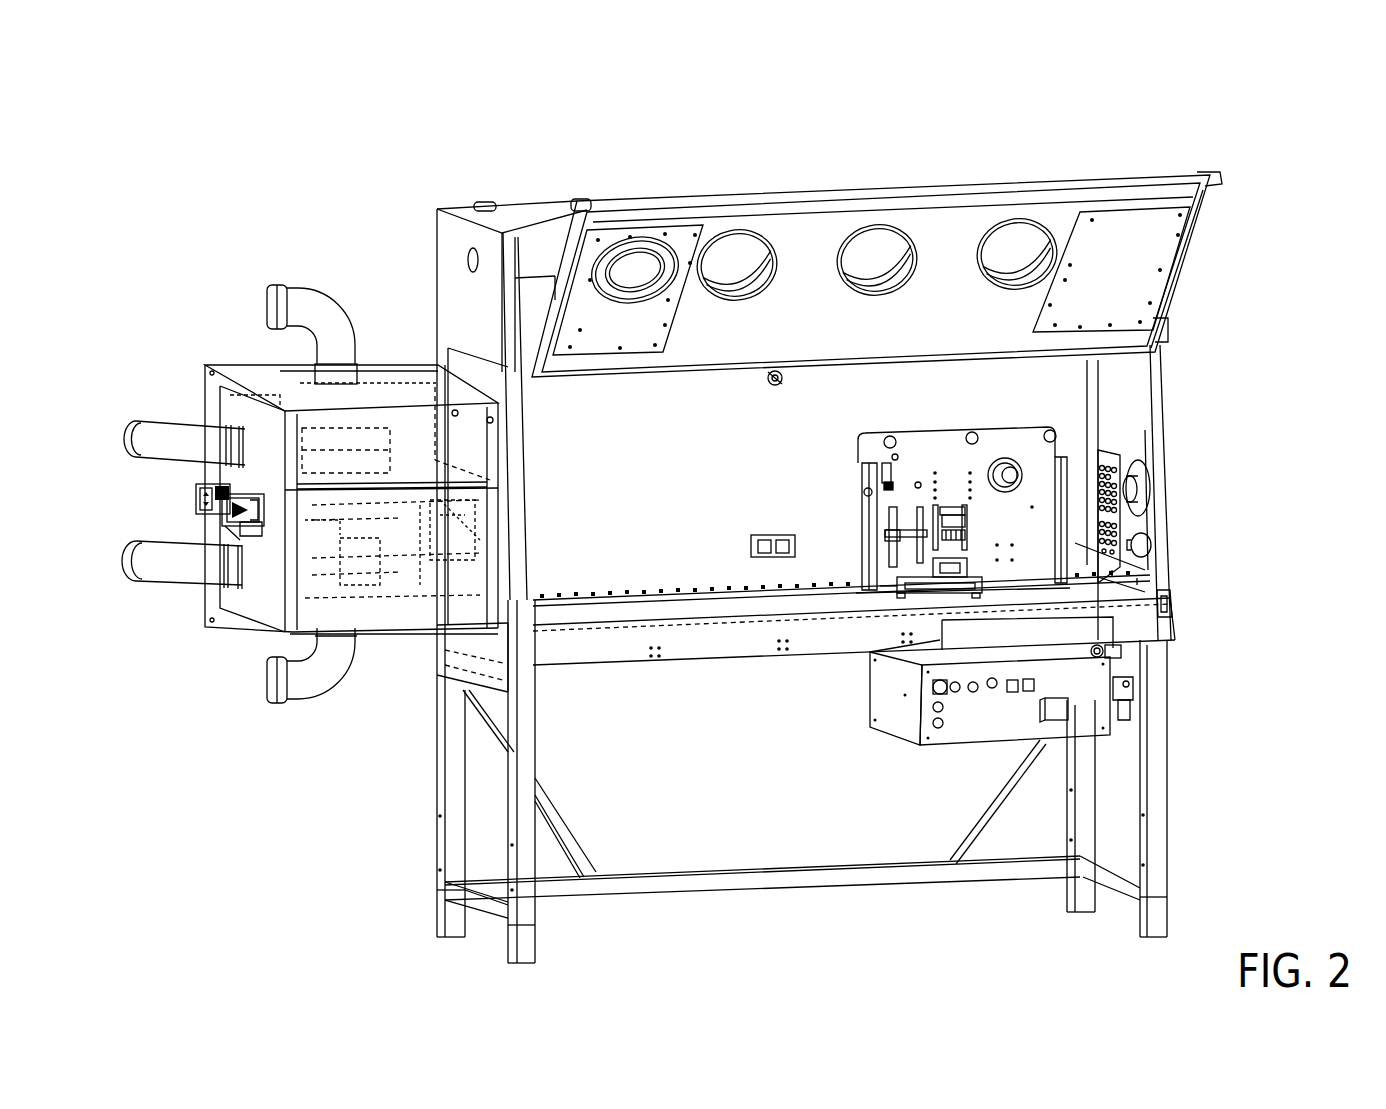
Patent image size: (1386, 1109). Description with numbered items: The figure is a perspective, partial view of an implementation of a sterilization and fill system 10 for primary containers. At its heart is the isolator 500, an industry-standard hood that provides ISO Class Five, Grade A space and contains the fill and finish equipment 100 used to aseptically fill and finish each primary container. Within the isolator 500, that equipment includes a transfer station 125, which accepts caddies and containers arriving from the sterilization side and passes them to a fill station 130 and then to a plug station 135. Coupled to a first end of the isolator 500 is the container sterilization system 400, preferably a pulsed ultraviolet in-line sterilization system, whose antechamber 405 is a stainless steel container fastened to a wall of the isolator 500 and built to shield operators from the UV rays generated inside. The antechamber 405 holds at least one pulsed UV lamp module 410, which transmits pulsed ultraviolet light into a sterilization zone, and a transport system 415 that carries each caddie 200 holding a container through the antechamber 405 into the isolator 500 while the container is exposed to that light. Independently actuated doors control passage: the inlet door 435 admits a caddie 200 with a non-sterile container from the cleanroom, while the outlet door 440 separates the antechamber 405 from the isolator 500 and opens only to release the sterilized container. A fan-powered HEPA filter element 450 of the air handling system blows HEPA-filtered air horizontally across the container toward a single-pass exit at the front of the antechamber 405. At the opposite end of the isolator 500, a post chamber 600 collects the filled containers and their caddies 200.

The sterilization and fill system 10 is at (195, 98).
The fill and finish equipment 100 is at (1152, 938).
The transfer station 125 is at (975, 568).
The fill station 130 is at (905, 511).
The plug station 135 is at (958, 520).
The caddie 200 is at (215, 488).
The container sterilization system 400 is at (404, 168).
The antechamber 405 is at (238, 405).
The pulsed UV lamp module 410 is at (330, 453).
The transport system 415 is at (322, 527).
The inlet door 435 is at (230, 512).
The outlet door 440 is at (455, 520).
The fan-powered HEPA filter element 450 is at (265, 368).
The isolator 500 is at (1220, 168).
The post chamber 600 is at (1165, 506).